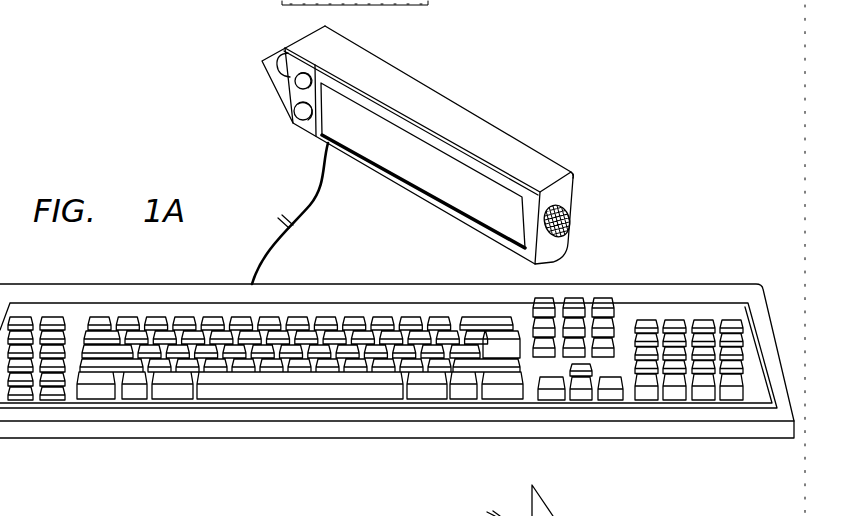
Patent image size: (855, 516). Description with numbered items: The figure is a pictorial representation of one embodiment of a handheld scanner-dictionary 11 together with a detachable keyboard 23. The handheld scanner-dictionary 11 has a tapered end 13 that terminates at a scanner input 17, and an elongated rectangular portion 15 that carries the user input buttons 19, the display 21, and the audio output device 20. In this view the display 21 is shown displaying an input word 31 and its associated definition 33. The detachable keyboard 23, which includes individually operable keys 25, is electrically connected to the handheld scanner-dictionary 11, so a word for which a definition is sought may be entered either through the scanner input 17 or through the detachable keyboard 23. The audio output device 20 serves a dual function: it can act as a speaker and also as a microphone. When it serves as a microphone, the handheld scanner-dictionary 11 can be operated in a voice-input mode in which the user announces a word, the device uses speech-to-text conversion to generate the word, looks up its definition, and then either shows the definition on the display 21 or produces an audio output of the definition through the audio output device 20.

The handheld scanner-dictionary 11 is at (543, 76).
The tapered end 13 is at (272, 98).
The elongated rectangular portion 15 is at (432, 100).
The scanner input 17 is at (262, 62).
The user input buttons 19 is at (288, 59).
The audio output device 20 is at (570, 230).
The display 21 is at (500, 240).
The detachable keyboard 23 is at (185, 438).
The individually operable keys 25 is at (300, 320).
The input word 31 is at (357, 117).
The associated definition 33 is at (455, 172).